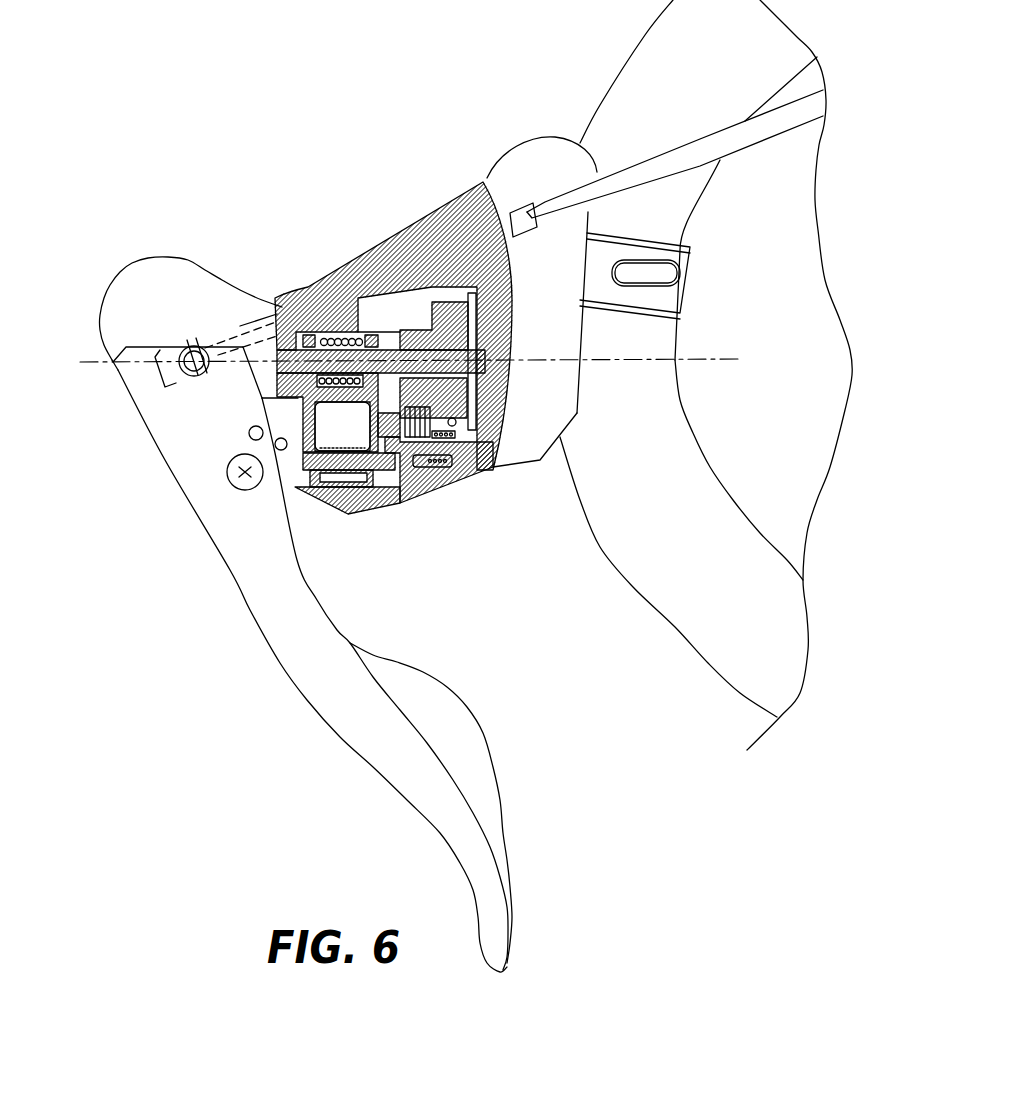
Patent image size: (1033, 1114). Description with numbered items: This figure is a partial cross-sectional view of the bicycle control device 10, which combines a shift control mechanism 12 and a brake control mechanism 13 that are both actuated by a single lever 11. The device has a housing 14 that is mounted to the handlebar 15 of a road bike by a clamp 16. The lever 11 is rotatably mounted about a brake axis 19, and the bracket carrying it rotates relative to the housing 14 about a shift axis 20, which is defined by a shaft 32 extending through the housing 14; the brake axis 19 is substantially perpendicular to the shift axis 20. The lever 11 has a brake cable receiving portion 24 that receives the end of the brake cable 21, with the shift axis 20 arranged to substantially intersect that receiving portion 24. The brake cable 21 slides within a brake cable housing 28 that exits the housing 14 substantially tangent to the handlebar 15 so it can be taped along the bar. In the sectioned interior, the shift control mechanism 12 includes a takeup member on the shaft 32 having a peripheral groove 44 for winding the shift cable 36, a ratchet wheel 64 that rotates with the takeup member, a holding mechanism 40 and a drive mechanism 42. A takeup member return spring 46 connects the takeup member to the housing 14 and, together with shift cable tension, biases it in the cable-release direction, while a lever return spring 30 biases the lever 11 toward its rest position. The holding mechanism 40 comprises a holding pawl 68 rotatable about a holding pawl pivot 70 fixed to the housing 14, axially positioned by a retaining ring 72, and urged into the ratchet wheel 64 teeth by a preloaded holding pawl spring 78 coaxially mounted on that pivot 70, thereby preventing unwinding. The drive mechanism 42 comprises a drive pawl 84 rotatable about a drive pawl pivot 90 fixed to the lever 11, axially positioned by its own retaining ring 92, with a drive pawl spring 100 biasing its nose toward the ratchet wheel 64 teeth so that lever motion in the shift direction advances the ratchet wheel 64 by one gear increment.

The bicycle control device 10 is at (215, 148).
The lever 11 is at (270, 593).
The shift control mechanism 12 is at (453, 520).
The brake control mechanism 13 is at (250, 318).
The housing 14 is at (480, 474).
The handlebar 15 is at (672, 207).
The clamp 16 is at (668, 260).
The brake axis 19 is at (228, 478).
The shift axis 20 is at (700, 358).
The brake cable 21 is at (262, 320).
The brake cable receiving portion 24 is at (163, 348).
The brake cable housing 28 is at (705, 148).
The lever return spring 30 is at (340, 340).
The shaft 32 is at (488, 365).
The shift cable 36 is at (440, 450).
The holding mechanism 40 is at (510, 505).
The drive mechanism 42 is at (355, 530).
The groove 44 is at (455, 325).
The takeup member return spring 46 is at (473, 295).
The ratchet wheel 64 is at (413, 330).
The holding pawl 68 is at (414, 455).
The holding pawl pivot 70 is at (487, 473).
The retaining ring 72 is at (402, 505).
The holding pawl spring 78 is at (425, 462).
The drive pawl 84 is at (368, 468).
The drive pawl pivot 90 is at (313, 490).
The retaining ring 92 is at (378, 448).
The drive pawl spring 100 is at (342, 502).